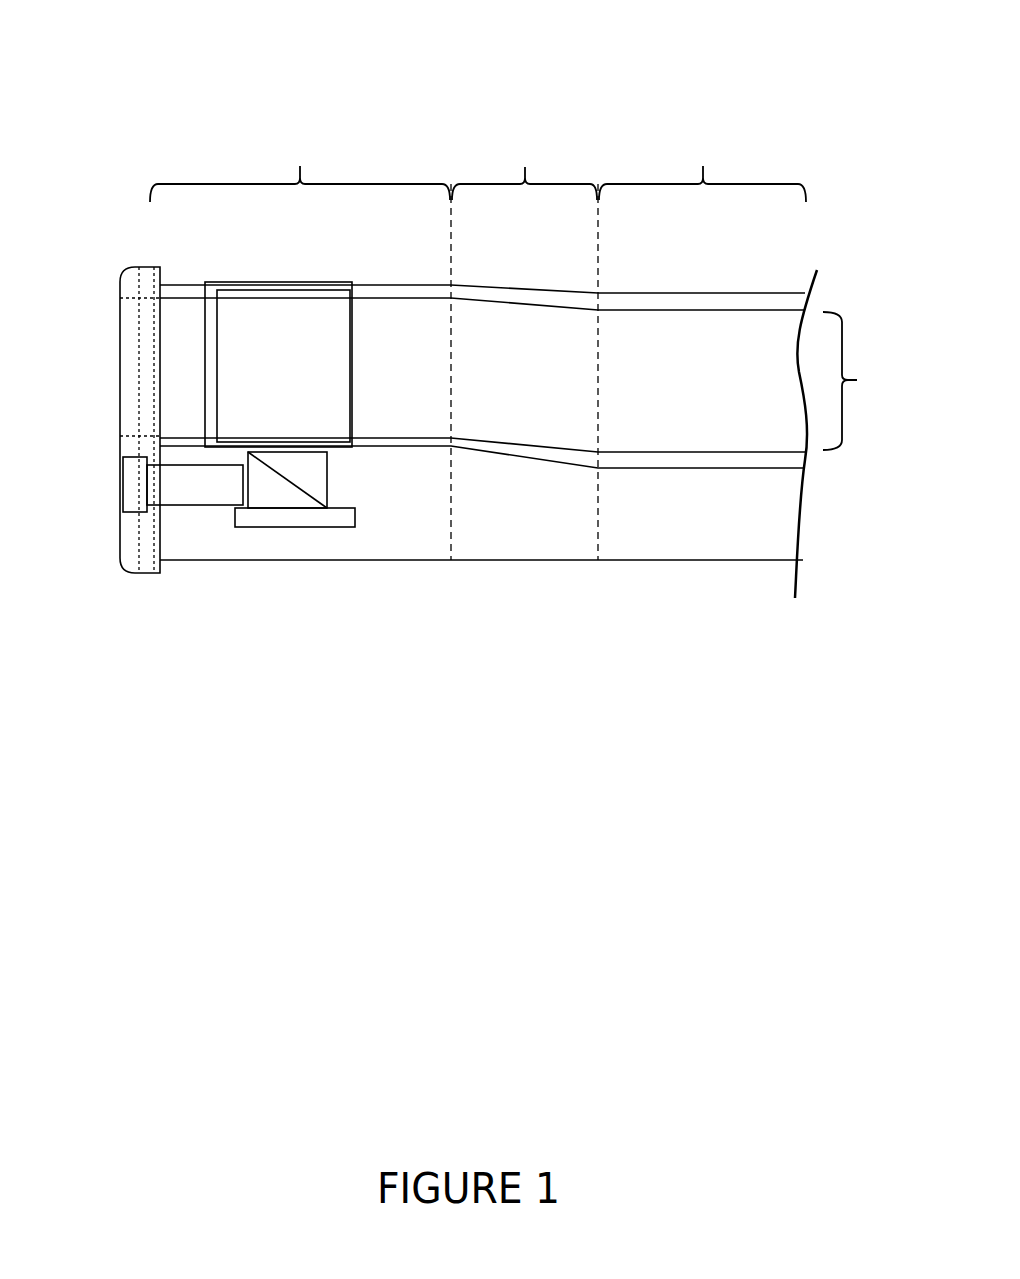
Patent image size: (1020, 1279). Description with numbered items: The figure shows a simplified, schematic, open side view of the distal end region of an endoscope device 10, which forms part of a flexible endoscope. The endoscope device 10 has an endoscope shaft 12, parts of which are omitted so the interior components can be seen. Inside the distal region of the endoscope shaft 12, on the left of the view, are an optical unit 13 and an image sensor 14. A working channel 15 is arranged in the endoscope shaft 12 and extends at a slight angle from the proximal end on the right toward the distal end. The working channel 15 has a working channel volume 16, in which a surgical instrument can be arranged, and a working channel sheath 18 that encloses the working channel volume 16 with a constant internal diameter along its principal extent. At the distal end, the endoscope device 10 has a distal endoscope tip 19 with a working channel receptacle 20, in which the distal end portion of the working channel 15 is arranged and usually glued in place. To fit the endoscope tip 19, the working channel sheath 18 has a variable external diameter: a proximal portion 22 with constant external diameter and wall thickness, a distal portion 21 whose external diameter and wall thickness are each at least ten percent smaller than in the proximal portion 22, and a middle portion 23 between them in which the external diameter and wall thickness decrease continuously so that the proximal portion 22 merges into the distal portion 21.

The endoscope device 10 is at (438, 118).
The endoscope shaft 12 is at (565, 560).
The optical unit 13 is at (200, 483).
The image sensor 14 is at (302, 513).
The working channel 15 is at (861, 381).
The working channel volume 16 is at (525, 367).
The working channel sheath 18 is at (727, 302).
The endoscope tip 19 is at (125, 285).
The working channel receptacle 20 is at (258, 282).
The distal portion 21 is at (300, 162).
The proximal portion 22 is at (702, 162).
The middle portion 23 is at (524, 161).